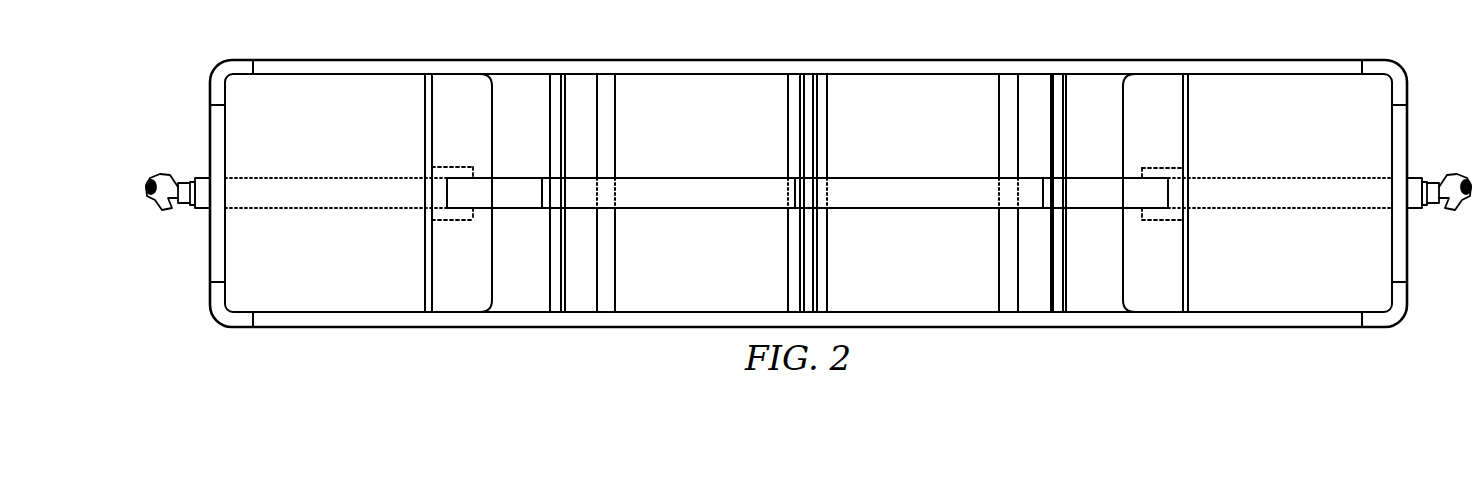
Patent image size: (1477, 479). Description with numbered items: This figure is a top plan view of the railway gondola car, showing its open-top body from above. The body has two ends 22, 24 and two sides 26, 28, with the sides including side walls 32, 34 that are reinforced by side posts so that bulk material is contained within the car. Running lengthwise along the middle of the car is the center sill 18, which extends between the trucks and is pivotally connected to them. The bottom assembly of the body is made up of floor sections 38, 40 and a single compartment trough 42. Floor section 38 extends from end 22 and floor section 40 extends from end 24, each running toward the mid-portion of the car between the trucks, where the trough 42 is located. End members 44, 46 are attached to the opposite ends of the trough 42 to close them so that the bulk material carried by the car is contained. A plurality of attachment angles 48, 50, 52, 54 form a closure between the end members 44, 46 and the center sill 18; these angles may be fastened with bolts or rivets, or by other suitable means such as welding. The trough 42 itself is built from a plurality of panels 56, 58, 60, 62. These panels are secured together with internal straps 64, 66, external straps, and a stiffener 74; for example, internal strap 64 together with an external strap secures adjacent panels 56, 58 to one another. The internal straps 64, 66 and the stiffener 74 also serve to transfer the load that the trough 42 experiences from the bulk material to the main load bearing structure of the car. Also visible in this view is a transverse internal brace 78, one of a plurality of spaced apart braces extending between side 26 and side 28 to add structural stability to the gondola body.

The center sill 18 is at (710, 178).
The end 22 is at (208, 140).
The end 24 is at (1410, 142).
The side 26 is at (689, 59).
The side 28 is at (672, 334).
The side wall 32 is at (907, 80).
The side wall 34 is at (958, 312).
The floor section 38 is at (312, 138).
The floor section 40 is at (1277, 138).
The single compartment trough 42 is at (893, 304).
The end member 44 is at (457, 80).
The end member 46 is at (1158, 82).
The attachment angle 48 is at (453, 222).
The attachment angle 50 is at (455, 167).
The attachment angle 52 is at (1160, 222).
The attachment angle 54 is at (1160, 168).
The panel 56 is at (505, 310).
The panel 58 is at (689, 273).
The panel 60 is at (902, 273).
The panel 62 is at (1110, 310).
The internal strap 64 is at (598, 88).
The internal strap 66 is at (998, 88).
The stiffener 74 is at (790, 88).
The transverse internal brace 78 is at (815, 132).